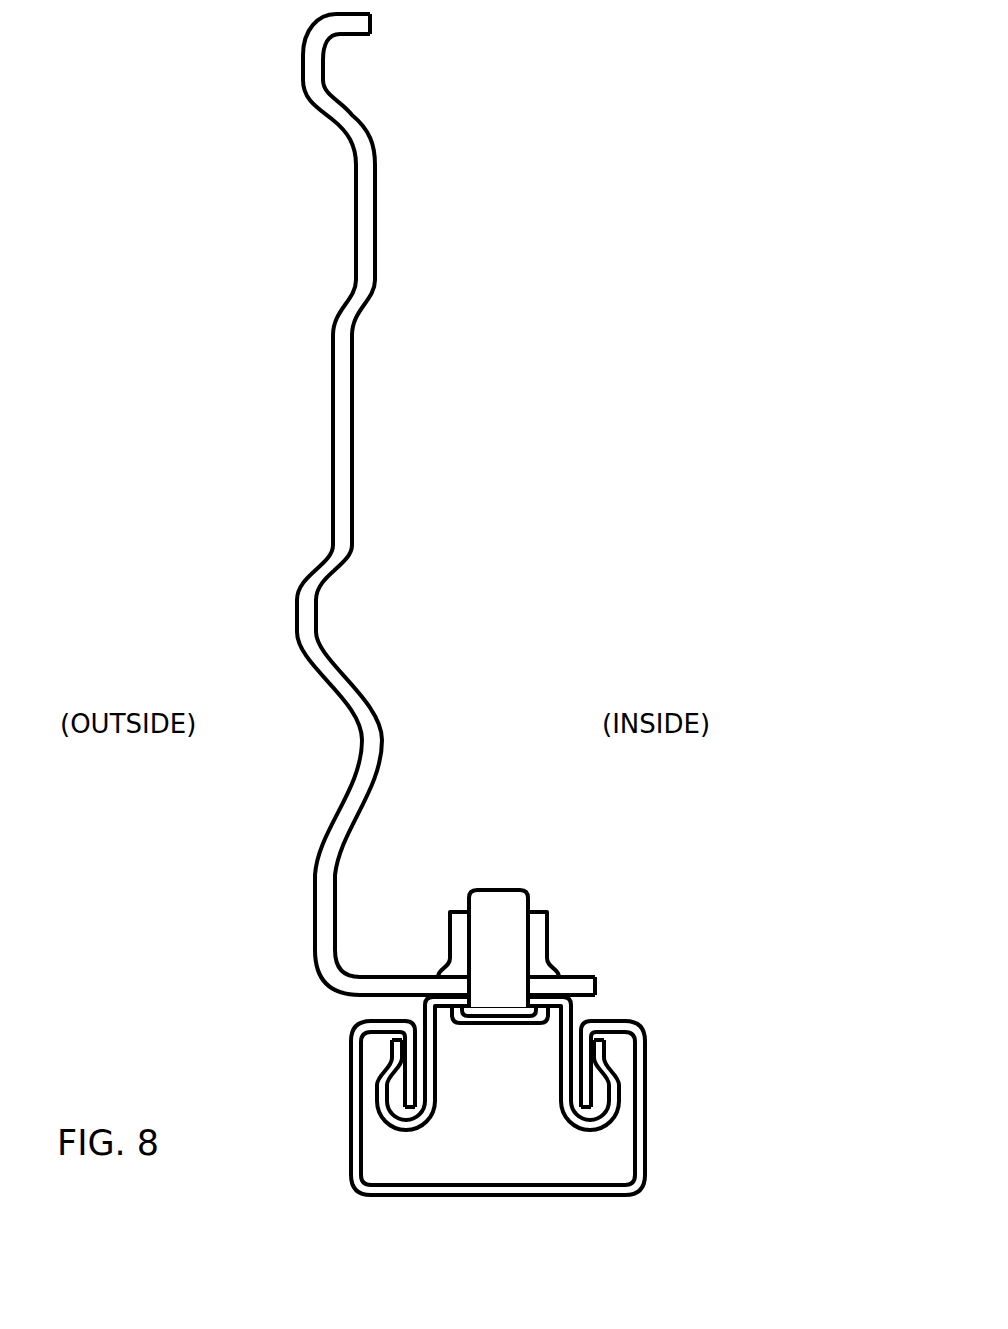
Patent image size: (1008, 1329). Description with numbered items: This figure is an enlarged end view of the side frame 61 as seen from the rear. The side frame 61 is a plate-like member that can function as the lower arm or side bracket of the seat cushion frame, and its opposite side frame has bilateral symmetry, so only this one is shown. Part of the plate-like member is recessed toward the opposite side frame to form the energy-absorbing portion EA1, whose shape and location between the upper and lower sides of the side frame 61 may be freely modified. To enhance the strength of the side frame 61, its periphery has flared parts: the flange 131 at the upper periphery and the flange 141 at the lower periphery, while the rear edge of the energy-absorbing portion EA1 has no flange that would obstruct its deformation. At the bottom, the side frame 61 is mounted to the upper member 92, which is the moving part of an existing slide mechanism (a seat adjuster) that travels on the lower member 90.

The side frame 61 is at (325, 504).
The flange 131 is at (348, 23).
The energy-absorbing portion EA1 is at (403, 730).
The flange 141 is at (387, 987).
The upper member 92 is at (570, 1017).
The lower member 90 is at (648, 1085).